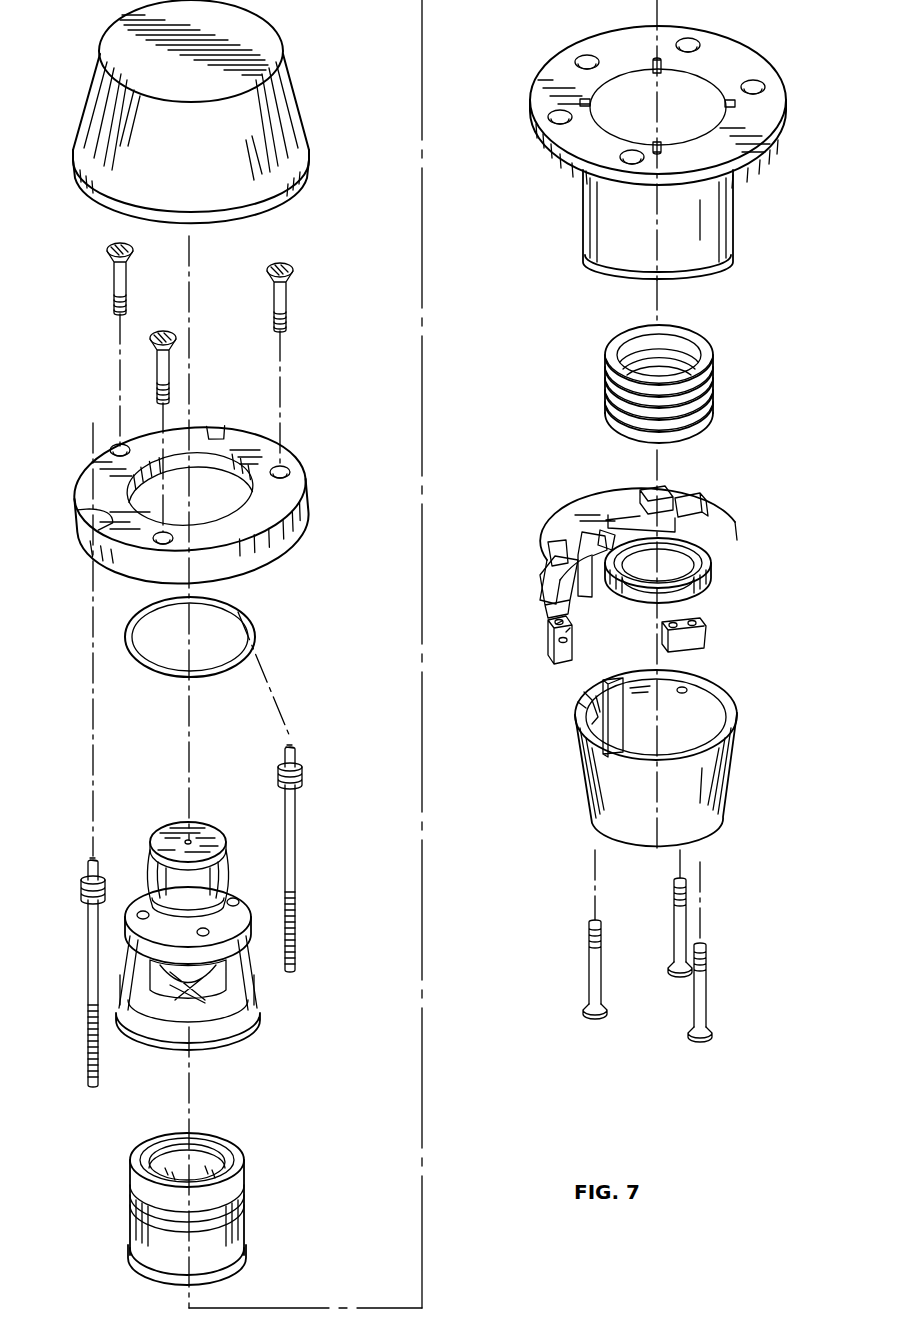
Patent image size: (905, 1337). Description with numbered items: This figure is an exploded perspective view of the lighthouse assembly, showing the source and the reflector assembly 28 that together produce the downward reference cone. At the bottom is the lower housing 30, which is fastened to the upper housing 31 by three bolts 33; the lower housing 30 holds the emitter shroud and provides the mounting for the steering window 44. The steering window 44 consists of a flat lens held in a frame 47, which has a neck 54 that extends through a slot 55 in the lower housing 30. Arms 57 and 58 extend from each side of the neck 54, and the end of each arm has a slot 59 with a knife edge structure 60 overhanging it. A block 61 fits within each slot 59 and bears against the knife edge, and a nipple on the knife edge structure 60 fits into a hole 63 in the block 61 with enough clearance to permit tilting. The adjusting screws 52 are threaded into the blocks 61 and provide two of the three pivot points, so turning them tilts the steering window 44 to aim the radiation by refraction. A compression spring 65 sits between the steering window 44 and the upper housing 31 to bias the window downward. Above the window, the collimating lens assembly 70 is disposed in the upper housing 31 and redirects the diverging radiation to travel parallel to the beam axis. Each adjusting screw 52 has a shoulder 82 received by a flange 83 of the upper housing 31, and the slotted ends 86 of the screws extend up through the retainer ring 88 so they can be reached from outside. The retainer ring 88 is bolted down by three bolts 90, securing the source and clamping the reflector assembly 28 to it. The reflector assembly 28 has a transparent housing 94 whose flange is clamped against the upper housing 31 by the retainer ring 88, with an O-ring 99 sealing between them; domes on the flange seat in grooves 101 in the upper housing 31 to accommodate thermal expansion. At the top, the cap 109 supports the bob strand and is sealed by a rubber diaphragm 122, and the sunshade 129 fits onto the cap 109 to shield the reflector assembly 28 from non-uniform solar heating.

The sunshade 129 is at (300, 104).
The bolts 90 is at (114, 292).
The retainer ring 88 is at (306, 527).
The O-ring 99 is at (255, 640).
The adjusting screws 52 is at (192, 916).
The shoulder 82 is at (82, 902).
The slotted ends 86 is at (87, 866).
The reflector assembly 28 is at (223, 924).
The cap 109 is at (190, 835).
The rubber diaphragm 122 is at (232, 868).
The housing 94 is at (215, 1008).
The collimating lens assembly 70 is at (258, 1215).
The flange 83 is at (657, 97).
The grooves 101 is at (653, 62).
The upper housing 31 is at (715, 200).
The compression spring 65 is at (714, 362).
The arm 57 is at (622, 500).
The arm 58 is at (548, 538).
The knife edge structure 60 is at (658, 488).
The slot 59 is at (703, 508).
The steering window 44 is at (724, 570).
The frame 47 is at (700, 590).
The neck 54 is at (608, 548).
The block 61 is at (552, 650).
The hole 63 is at (553, 624).
The lower housing 30 is at (684, 746).
The slot 55 is at (606, 704).
The bolts 33 is at (592, 958).